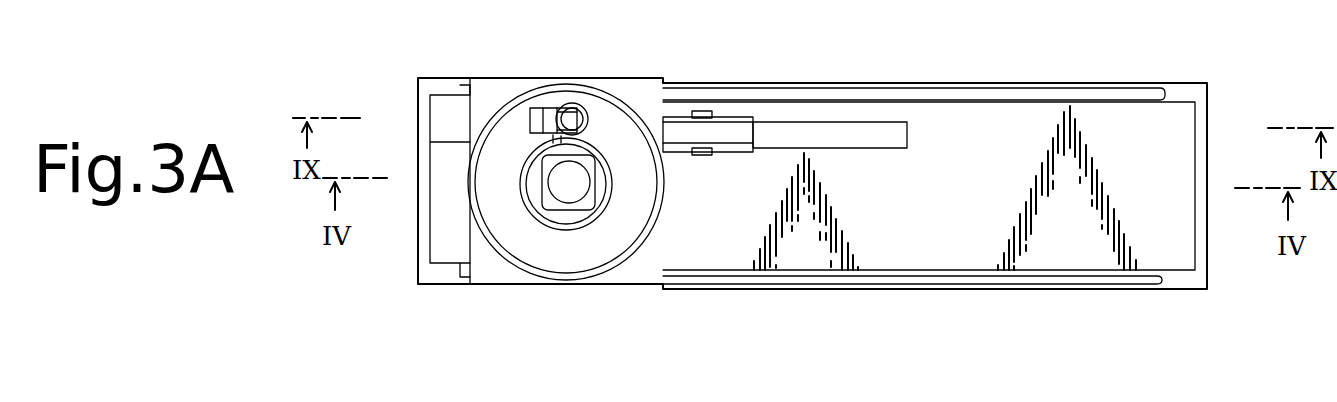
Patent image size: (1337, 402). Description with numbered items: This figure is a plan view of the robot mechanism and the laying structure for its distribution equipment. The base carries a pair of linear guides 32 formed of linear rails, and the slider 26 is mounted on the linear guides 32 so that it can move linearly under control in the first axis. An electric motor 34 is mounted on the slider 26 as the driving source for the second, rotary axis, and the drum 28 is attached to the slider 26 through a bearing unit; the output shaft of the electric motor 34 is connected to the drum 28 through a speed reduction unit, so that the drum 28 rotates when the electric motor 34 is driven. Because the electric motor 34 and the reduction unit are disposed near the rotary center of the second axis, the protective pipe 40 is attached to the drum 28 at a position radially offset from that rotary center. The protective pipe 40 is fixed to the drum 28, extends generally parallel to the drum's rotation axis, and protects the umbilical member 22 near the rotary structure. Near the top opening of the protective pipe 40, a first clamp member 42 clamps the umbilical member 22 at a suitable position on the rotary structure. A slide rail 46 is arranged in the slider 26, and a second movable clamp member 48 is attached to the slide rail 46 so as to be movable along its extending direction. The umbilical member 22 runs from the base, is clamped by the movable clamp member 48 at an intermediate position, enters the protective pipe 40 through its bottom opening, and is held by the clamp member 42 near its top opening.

The umbilical member 22 is at (871, 132).
The slider 26 is at (488, 92).
The drum 28 is at (610, 286).
The linear guide 32 is at (993, 92).
The electric motor 34 is at (563, 190).
The protective pipe 40 is at (580, 109).
The first clamp member 42 is at (567, 106).
The slide rail 46 is at (737, 116).
The second movable clamp member 48 is at (702, 112).